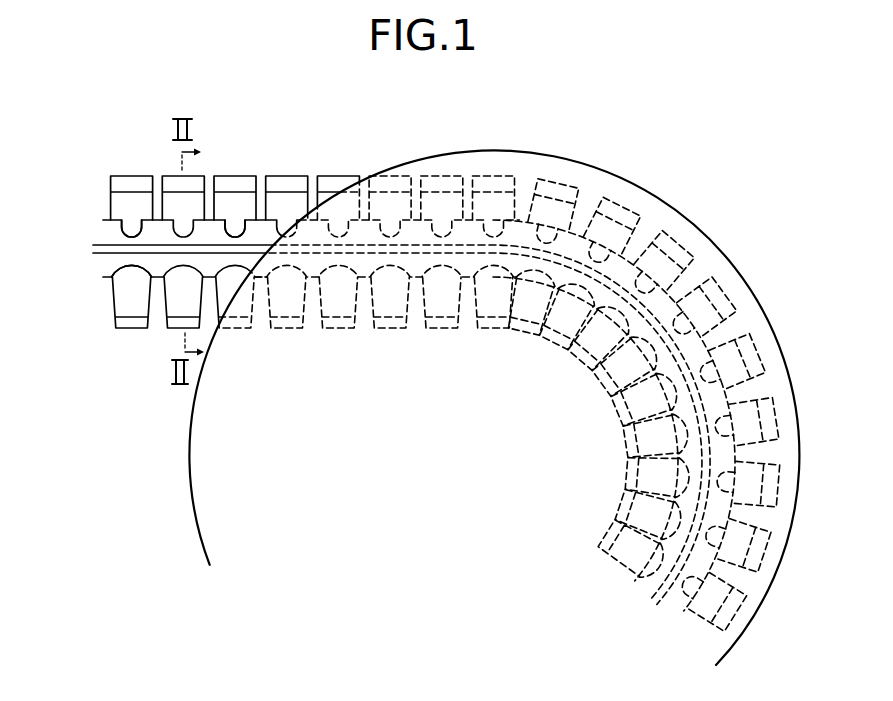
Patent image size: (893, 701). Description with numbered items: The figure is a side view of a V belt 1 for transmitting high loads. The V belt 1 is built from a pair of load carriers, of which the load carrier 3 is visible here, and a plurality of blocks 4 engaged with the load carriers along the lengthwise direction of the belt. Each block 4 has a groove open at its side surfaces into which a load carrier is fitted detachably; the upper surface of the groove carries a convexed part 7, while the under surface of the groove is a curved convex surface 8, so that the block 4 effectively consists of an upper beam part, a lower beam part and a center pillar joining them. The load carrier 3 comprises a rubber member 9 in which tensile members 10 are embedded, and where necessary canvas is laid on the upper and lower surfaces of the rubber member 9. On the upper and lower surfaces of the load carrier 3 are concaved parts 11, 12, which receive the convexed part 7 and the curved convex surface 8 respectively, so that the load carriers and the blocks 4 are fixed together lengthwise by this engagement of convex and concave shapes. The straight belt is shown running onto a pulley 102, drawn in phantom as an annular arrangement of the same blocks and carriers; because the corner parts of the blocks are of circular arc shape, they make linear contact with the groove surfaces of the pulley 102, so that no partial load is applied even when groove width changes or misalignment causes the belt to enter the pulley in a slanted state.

The V belt 1 is at (296, 172).
The load carrier 3 is at (104, 219).
The block 4 is at (232, 176).
The convexed part 7 is at (239, 230).
The curved convex surface 8 is at (261, 279).
The rubber member 9 is at (104, 277).
The tensile members 10 is at (93, 246).
The concaved part 11 is at (131, 234).
The concaved part 12 is at (131, 268).
The pulley 102 is at (624, 179).